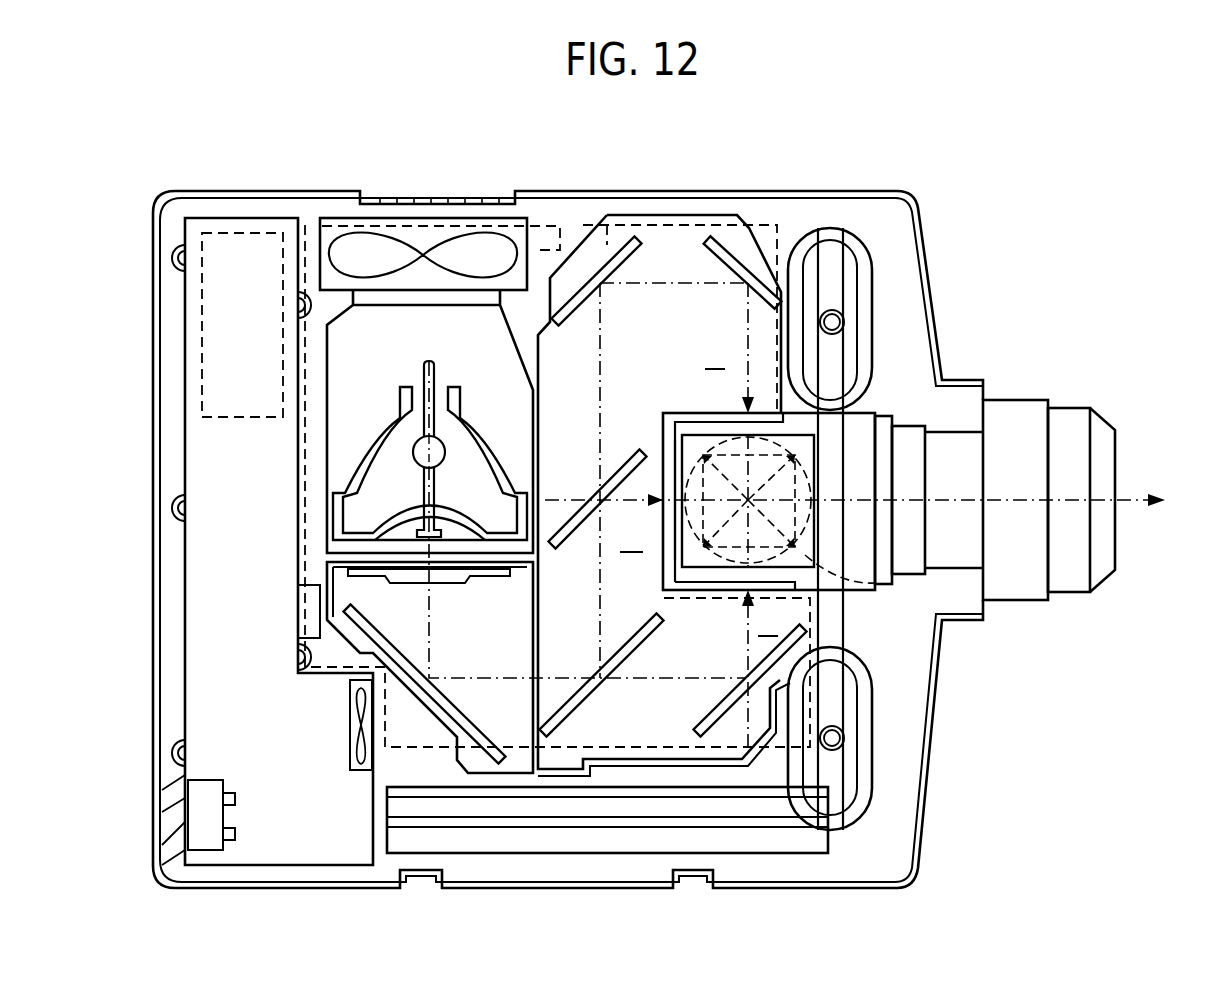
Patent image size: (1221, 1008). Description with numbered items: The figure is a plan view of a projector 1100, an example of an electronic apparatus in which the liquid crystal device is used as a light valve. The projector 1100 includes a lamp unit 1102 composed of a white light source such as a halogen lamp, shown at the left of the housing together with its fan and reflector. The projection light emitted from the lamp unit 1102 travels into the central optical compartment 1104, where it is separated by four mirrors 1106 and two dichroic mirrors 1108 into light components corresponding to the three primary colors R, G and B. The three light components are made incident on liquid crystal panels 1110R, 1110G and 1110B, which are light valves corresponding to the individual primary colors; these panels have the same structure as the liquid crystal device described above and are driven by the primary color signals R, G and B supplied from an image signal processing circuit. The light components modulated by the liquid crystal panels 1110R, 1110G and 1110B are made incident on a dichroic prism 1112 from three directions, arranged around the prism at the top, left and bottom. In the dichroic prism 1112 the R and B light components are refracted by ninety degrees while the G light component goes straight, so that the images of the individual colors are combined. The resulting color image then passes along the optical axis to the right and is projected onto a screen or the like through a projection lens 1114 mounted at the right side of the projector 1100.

The projector 1100 is at (945, 190).
The lamp unit 1102 is at (480, 343).
The optical engine housing 1104 is at (607, 227).
The mirrors 1106 is at (730, 268).
The dichroic mirrors 1108 is at (580, 540).
The liquid crystal panel 1110R is at (713, 413).
The liquid crystal panel 1110G is at (677, 470).
The liquid crystal panel 1110B is at (705, 590).
The dichroic prism 1112 is at (872, 590).
The projection lens 1114 is at (1080, 418).